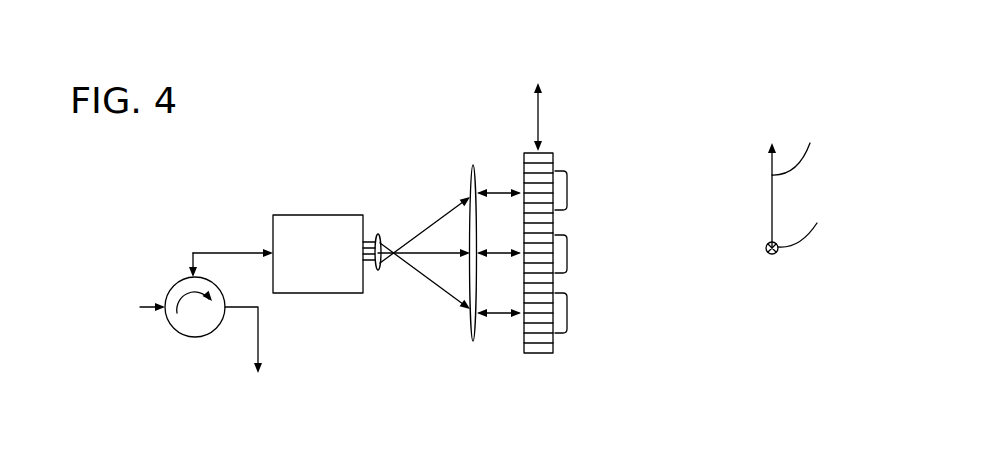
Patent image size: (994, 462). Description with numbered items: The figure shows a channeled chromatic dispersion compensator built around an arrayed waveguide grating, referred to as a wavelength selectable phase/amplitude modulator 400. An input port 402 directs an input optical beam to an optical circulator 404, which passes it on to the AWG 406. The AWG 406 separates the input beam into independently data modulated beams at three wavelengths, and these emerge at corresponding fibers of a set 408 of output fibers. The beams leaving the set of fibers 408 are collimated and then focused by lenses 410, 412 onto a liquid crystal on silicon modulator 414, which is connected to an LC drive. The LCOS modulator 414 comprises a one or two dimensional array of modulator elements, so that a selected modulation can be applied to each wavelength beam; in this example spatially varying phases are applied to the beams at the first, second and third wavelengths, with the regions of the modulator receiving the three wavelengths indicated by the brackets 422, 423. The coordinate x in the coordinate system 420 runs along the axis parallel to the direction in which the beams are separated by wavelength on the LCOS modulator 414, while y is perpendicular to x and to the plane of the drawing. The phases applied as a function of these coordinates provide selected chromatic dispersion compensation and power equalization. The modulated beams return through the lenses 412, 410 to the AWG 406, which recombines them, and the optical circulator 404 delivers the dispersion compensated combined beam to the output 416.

The wavelength selectable phase/amplitude modulator 400 is at (336, 125).
The input port 402 is at (152, 301).
The optical circulator 404 is at (192, 337).
The arrayed waveguide grating 406 is at (340, 213).
The set of output fibers 408 is at (371, 292).
The lens 410 is at (378, 234).
The lens 412 is at (473, 343).
The liquid crystal on silicon modulator 414 is at (524, 354).
The output 416 is at (258, 330).
The coordinate system 420 is at (748, 98).
The pixel group for wavelength channel 422 is at (567, 189).
The pixel group for wavelength channel 423 is at (567, 313).